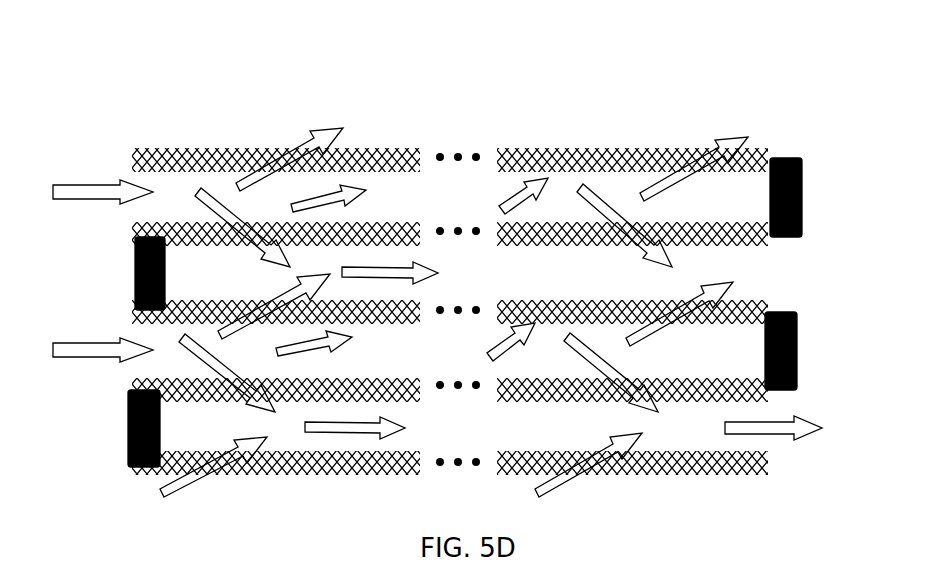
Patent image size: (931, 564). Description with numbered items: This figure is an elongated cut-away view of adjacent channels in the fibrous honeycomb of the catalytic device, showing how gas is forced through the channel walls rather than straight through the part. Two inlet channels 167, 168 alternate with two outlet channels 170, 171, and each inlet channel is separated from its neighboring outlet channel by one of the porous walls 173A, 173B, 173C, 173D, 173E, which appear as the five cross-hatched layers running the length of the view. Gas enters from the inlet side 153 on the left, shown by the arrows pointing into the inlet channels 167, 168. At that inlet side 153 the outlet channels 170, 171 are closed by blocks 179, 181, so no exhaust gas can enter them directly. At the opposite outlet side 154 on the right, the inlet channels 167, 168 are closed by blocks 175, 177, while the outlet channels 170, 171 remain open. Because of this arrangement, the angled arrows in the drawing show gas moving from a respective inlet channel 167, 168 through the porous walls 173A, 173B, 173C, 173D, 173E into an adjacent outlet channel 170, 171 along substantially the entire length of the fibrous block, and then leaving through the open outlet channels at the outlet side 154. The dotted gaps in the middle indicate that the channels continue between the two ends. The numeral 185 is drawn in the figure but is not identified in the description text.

The inlet side 153 is at (200, 57).
The outlet side 154 is at (740, 58).
The inlet channel 167 is at (195, 172).
The inlet channel 168 is at (150, 338).
The outlet channel 170 is at (803, 258).
The outlet channel 171 is at (802, 450).
The porous wall 173A is at (563, 150).
The porous wall 173B is at (750, 230).
The porous wall 173C is at (762, 312).
The porous wall 173D is at (765, 395).
The porous wall 173E is at (745, 470).
The block 175 is at (803, 196).
The block 177 is at (797, 350).
The block 179 is at (128, 428).
The block 181 is at (135, 275).
The layer 185 is at (565, 402).